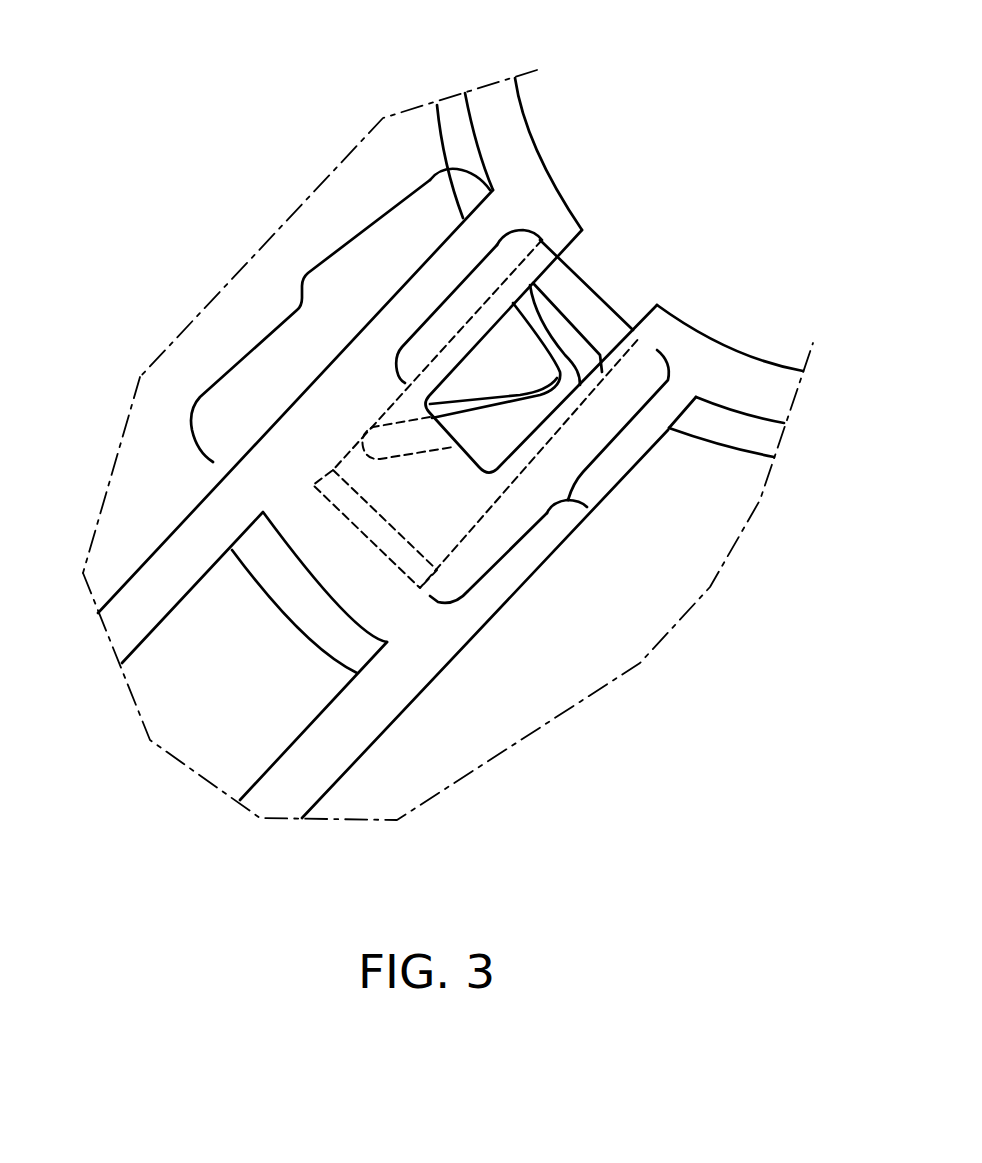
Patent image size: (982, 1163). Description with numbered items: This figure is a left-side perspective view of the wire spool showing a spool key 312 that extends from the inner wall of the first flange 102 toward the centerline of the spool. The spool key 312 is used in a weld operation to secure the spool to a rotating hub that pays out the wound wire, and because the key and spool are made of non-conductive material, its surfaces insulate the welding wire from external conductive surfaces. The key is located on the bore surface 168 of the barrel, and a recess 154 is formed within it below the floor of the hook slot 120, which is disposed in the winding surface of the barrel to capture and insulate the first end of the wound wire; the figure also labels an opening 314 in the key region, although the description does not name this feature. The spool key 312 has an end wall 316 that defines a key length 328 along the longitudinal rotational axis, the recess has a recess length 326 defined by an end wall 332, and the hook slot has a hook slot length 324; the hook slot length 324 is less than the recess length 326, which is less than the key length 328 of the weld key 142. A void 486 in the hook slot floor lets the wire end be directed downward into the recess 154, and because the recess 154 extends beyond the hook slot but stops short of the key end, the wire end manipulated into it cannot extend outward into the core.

The first flange 102 is at (453, 130).
The hook slot 120 is at (625, 355).
The weld key 142 is at (523, 563).
The recess 154 is at (437, 520).
The bore surface 168 is at (182, 390).
The spool key 312 is at (483, 657).
The opening 314 is at (467, 455).
The end wall 316 is at (358, 645).
The hook slot length 324 is at (450, 290).
The recess length 326 is at (587, 507).
The key length 328 is at (302, 277).
The end wall 332 is at (343, 490).
The void 486 is at (398, 443).